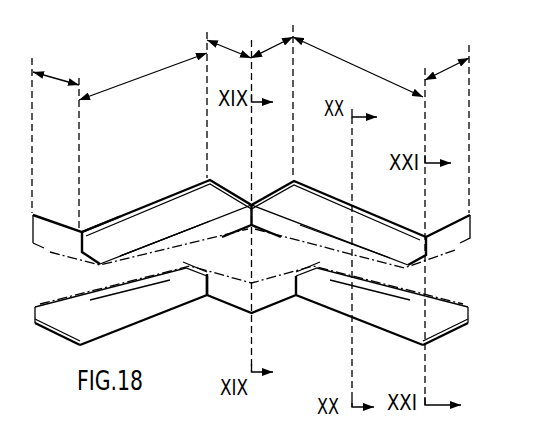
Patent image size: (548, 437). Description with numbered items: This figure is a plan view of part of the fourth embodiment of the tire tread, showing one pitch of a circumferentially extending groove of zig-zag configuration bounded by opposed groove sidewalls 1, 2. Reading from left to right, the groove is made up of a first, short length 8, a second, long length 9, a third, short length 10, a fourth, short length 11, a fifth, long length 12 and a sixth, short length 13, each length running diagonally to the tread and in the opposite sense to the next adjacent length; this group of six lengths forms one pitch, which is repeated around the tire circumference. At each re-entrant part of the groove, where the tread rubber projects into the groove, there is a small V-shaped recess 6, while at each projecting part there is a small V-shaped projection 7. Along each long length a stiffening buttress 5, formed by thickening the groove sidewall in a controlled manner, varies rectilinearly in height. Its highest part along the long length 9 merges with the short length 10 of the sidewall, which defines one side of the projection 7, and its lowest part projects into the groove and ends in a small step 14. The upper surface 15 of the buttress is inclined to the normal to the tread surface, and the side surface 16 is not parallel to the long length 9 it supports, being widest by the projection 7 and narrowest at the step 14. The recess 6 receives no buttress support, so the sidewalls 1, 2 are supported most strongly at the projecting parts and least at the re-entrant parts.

The groove sidewall 1 is at (358, 208).
The groove sidewall 2 is at (385, 323).
The stiffening buttress 5 is at (316, 210).
The small recess 6 is at (44, 262).
The small projection 7 is at (238, 186).
The first short length 8 is at (46, 76).
The second long length 9 is at (128, 82).
The third short length 10 is at (240, 54).
The fourth short length 11 is at (279, 44).
The fifth long length 12 is at (352, 46).
The sixth short length 13 is at (431, 43).
The small step 14 is at (98, 224).
The upper surface 15 is at (153, 223).
The side surface 16 is at (191, 238).